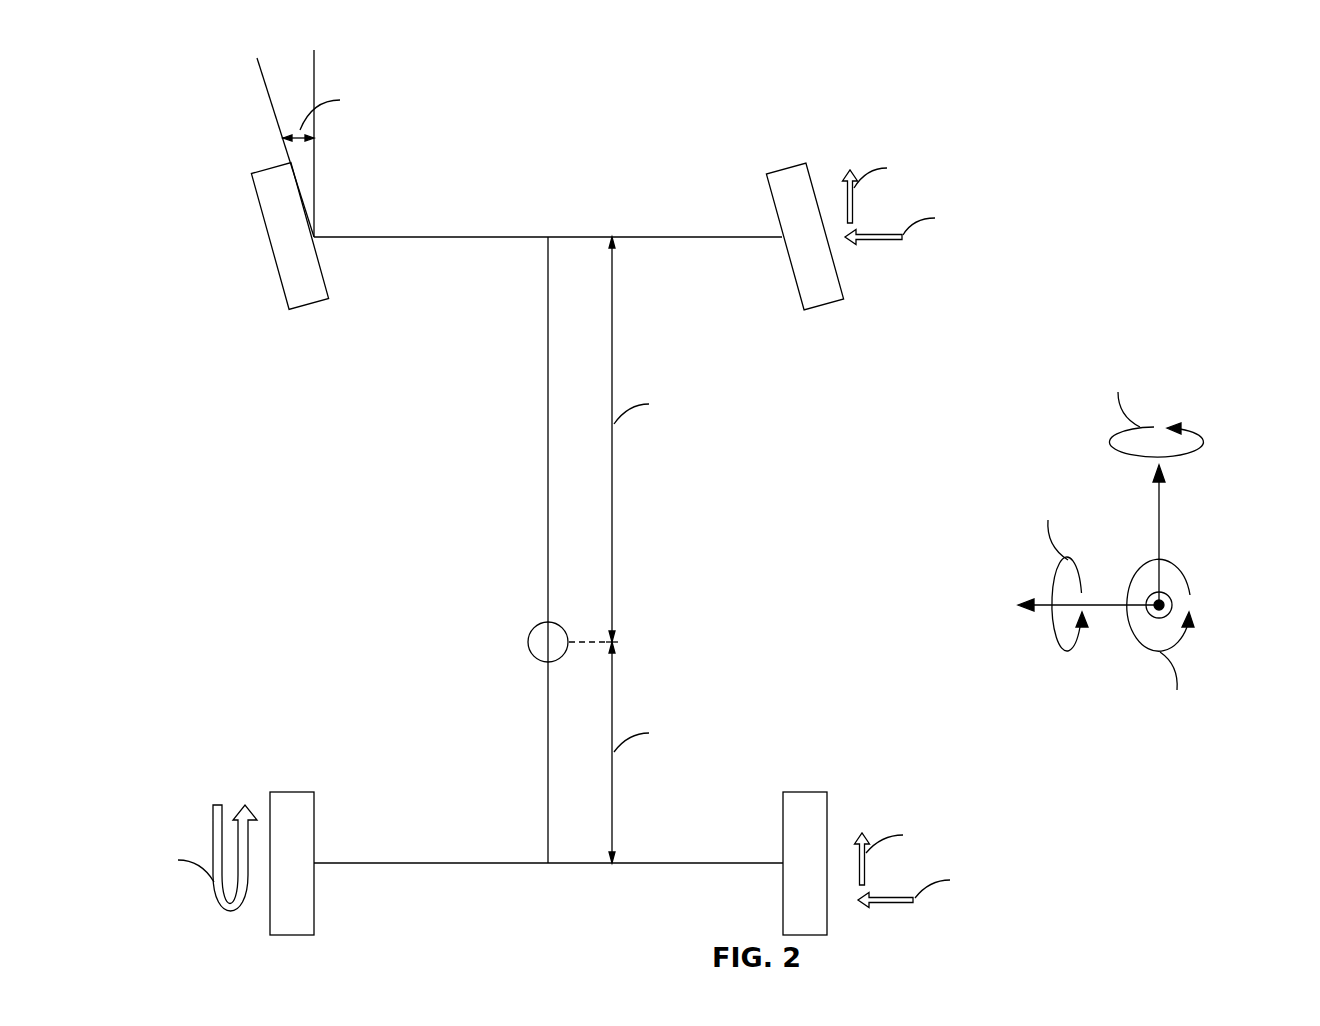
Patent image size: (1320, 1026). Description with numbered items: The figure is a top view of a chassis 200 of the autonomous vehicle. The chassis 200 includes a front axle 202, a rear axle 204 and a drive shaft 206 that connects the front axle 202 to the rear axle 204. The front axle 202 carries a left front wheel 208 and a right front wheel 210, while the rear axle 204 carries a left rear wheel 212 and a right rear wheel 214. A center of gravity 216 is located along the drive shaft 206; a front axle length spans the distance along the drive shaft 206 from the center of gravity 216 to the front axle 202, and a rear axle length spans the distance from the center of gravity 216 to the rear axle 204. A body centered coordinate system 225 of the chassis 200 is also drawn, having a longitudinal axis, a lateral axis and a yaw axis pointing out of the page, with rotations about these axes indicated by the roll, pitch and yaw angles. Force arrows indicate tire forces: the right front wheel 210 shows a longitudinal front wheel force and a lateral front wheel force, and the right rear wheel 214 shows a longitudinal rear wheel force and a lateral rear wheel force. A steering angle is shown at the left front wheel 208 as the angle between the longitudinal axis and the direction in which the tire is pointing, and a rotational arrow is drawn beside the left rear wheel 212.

The chassis 200 is at (621, 492).
The front axle 202 is at (630, 237).
The rear axle 204 is at (679, 863).
The drive shaft 206 is at (548, 455).
The left front wheel 208 is at (267, 166).
The right front wheel 210 is at (781, 170).
The left rear wheel 212 is at (293, 792).
The right rear wheel 214 is at (802, 792).
The center of gravity 216 is at (533, 626).
The body centered coordinate system 225 is at (1240, 470).